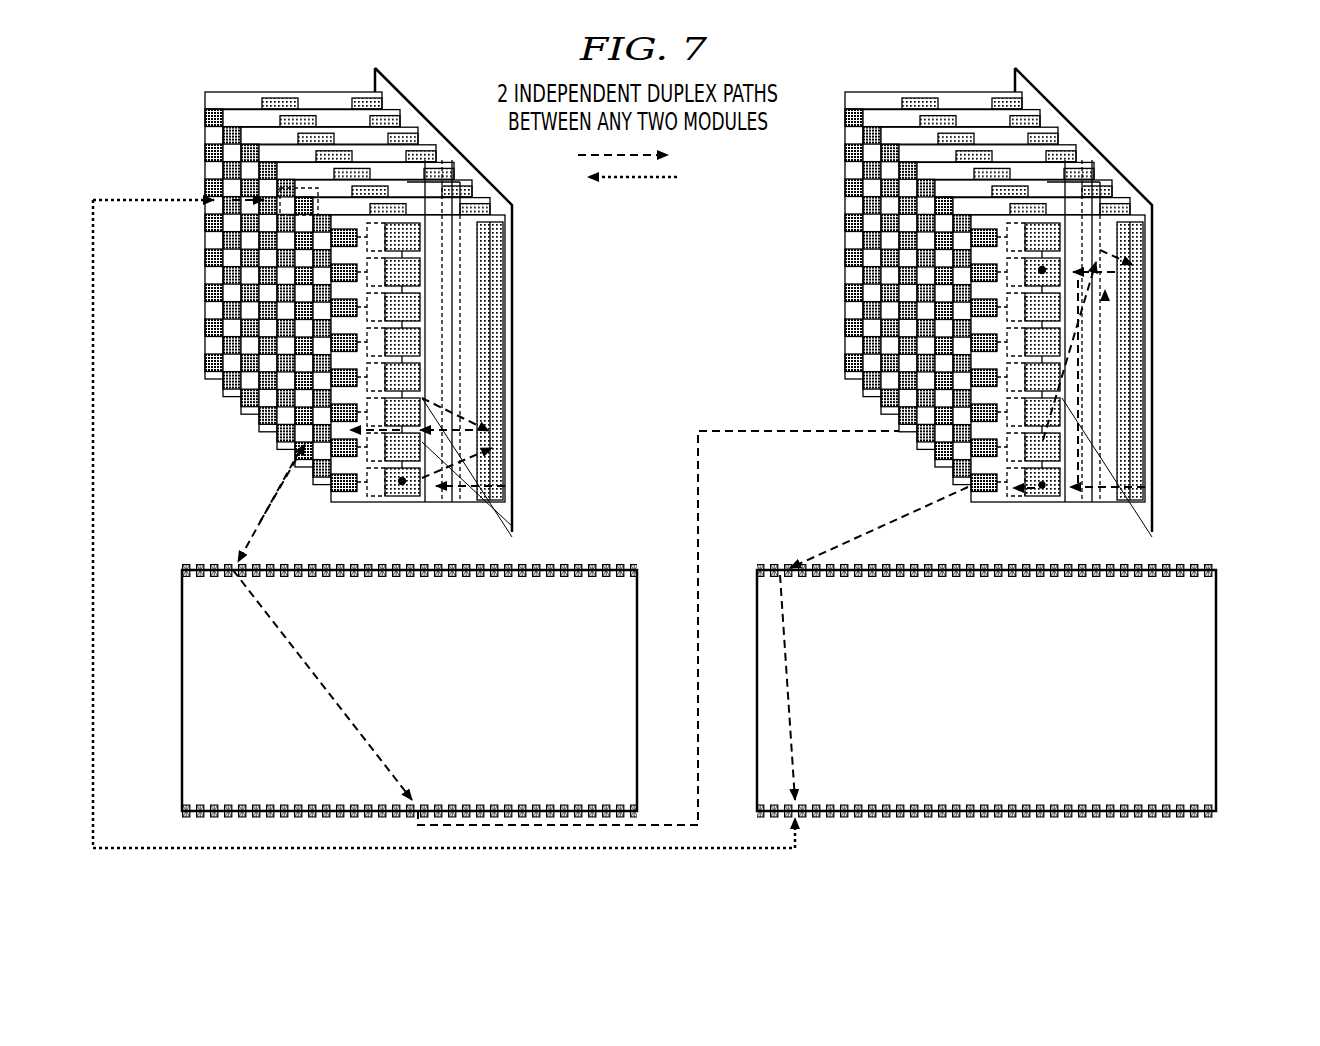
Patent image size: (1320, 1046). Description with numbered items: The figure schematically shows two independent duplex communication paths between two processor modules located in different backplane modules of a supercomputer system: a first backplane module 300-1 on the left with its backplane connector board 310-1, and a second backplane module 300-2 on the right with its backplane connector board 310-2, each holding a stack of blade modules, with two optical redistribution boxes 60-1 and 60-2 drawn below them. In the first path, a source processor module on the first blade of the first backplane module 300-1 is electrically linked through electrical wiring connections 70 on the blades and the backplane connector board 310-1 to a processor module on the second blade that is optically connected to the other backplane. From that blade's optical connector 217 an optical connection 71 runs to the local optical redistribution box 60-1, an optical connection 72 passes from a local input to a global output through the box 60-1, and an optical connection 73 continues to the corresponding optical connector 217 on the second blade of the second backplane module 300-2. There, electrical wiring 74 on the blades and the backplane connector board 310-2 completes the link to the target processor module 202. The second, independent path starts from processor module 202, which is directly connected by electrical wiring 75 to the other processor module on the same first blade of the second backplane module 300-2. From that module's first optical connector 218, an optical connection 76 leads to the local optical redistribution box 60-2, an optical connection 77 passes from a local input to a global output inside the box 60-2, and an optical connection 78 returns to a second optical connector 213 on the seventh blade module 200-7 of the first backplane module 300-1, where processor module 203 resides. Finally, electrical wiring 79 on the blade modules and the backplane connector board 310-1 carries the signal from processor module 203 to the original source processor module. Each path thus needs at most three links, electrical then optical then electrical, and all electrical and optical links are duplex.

The first backplane module 300-1 is at (322, 302).
The second backplane module 300-2 is at (1008, 302).
The backplane connector board 310-1 is at (514, 273).
The backplane connector board 310-2 is at (1124, 160).
The seventh blade module 200-7 is at (232, 112).
The target processor module 202 is at (1062, 262).
The processor module 203 is at (276, 199).
The second optical connector 213 is at (230, 193).
The optical connector 217 is at (338, 432).
The first optical connector 218 is at (990, 490).
The local optical redistribution box 60-1 is at (182, 705).
The local optical redistribution box 60-2 is at (1216, 692).
The electrical wiring connections 70 is at (498, 430).
The optical connection 71 is at (252, 517).
The optical connection 72 is at (333, 693).
The optical connection 73 is at (698, 497).
The electrical wiring 74 is at (1108, 292).
The electrical wiring 75 is at (1080, 412).
The optical connection 76 is at (826, 545).
The optical connection 77 is at (795, 690).
The optical connection 78 is at (93, 485).
The electrical wiring 79 is at (503, 473).